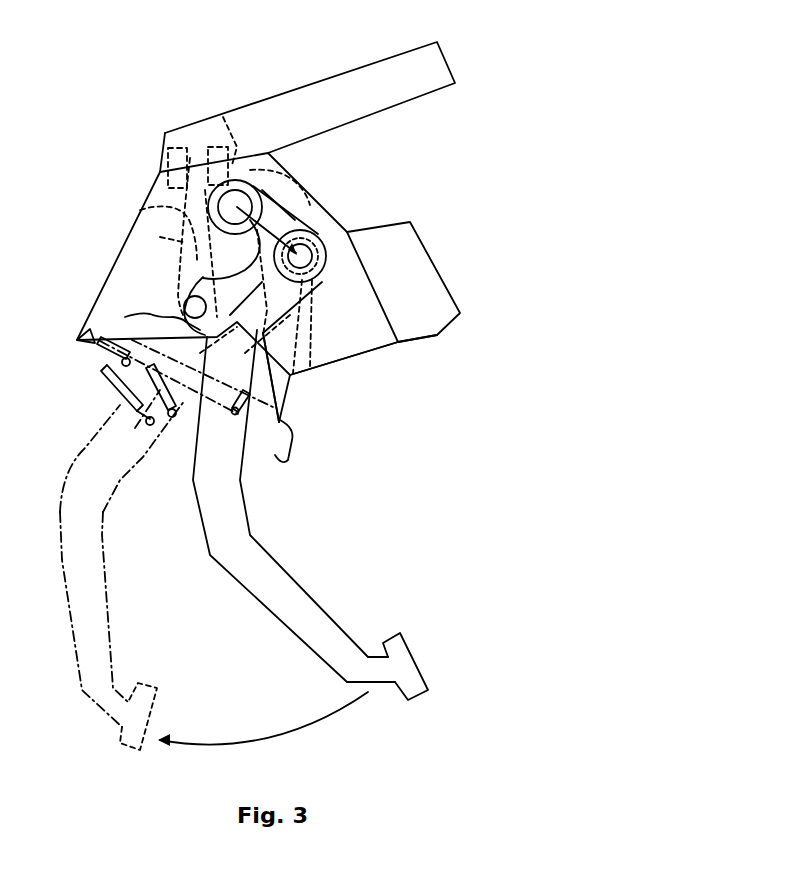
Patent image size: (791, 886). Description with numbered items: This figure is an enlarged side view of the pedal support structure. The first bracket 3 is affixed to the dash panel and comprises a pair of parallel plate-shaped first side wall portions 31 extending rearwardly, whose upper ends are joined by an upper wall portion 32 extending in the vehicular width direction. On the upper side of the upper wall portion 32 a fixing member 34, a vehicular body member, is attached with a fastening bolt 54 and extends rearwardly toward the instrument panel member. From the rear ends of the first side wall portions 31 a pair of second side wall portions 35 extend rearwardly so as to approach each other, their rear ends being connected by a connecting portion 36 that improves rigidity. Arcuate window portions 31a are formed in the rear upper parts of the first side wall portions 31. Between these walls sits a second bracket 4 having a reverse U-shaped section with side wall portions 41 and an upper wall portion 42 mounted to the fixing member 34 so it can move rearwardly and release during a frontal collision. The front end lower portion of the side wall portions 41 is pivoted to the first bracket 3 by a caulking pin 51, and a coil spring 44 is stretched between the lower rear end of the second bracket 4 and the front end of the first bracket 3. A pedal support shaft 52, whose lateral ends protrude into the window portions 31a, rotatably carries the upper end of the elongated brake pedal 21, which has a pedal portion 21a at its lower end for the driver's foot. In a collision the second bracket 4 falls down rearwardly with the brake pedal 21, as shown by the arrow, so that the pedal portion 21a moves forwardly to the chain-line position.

The fixing member 34 is at (378, 62).
The upper wall portion 32 is at (262, 151).
The connecting portion 36 is at (430, 247).
The second side wall portions 35 is at (440, 340).
The first bracket 3 is at (380, 348).
The upper wall portion 42 is at (178, 138).
The fastening bolt 54 is at (226, 132).
The side wall portions 41 is at (140, 218).
The pedal support shaft 52 is at (314, 193).
The window portions 31a is at (186, 298).
The caulking pin 51 is at (153, 306).
The coil spring 44 is at (168, 390).
The first side wall portions 31 is at (280, 424).
The second bracket 4 is at (213, 430).
The brake pedal 21 is at (250, 593).
The pedal portion 21a is at (412, 657).